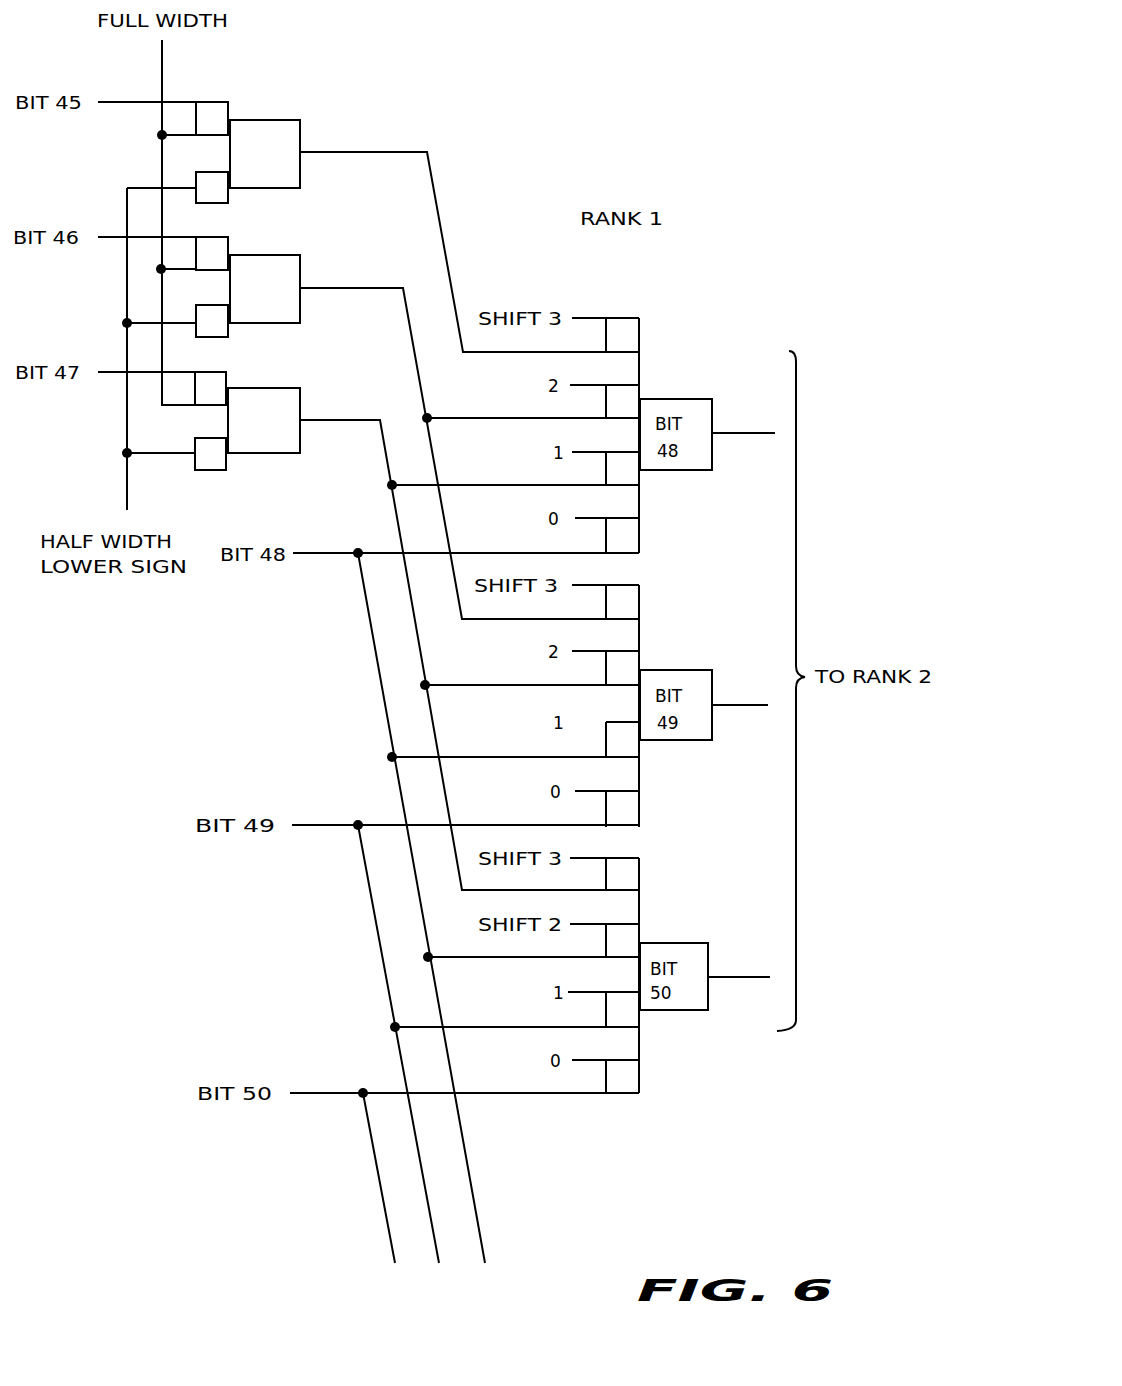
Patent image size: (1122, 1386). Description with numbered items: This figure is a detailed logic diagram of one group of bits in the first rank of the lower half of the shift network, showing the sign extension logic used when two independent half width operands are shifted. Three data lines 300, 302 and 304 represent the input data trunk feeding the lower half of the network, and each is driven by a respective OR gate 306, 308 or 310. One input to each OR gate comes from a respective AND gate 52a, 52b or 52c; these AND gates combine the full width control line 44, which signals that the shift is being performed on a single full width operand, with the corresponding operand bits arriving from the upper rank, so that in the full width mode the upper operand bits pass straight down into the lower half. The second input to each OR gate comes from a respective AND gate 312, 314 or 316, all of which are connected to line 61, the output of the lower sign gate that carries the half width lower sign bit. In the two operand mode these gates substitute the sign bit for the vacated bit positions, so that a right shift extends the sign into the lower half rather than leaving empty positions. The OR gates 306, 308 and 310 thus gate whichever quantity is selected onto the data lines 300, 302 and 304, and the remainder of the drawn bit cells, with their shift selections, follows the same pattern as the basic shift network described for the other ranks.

The control line 44 is at (163, 63).
The AND gate 52a is at (212, 103).
The AND gate 52b is at (210, 237).
The AND gate 52c is at (205, 372).
The OR gate 306 is at (303, 137).
The OR gate 308 is at (303, 258).
The OR gate 310 is at (272, 388).
The data line 300 is at (398, 152).
The data line 302 is at (340, 288).
The data line 304 is at (318, 420).
The AND gate 312 is at (208, 172).
The AND gate 314 is at (208, 305).
The AND gate 316 is at (205, 438).
The line 61 is at (127, 490).